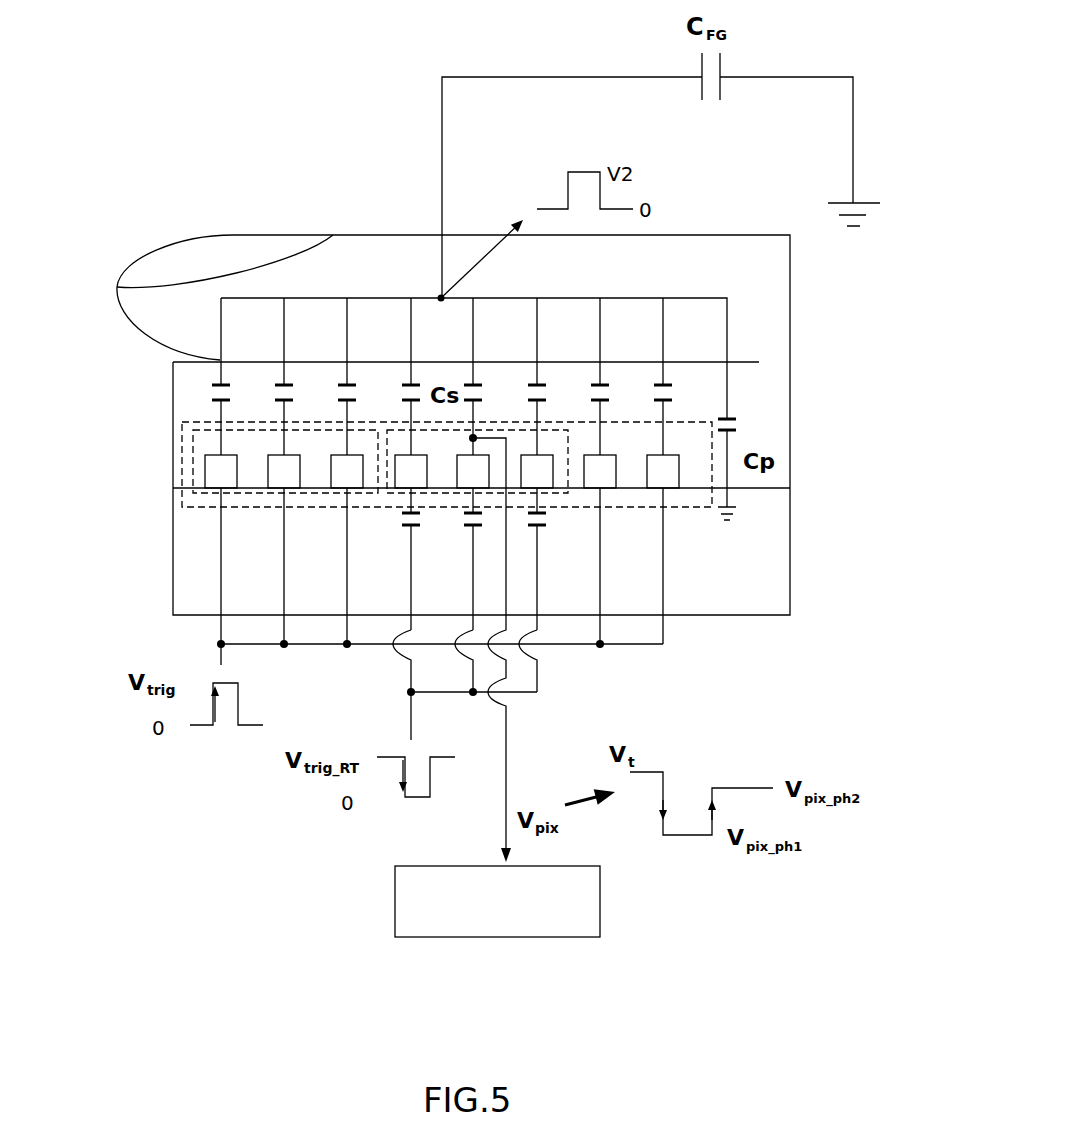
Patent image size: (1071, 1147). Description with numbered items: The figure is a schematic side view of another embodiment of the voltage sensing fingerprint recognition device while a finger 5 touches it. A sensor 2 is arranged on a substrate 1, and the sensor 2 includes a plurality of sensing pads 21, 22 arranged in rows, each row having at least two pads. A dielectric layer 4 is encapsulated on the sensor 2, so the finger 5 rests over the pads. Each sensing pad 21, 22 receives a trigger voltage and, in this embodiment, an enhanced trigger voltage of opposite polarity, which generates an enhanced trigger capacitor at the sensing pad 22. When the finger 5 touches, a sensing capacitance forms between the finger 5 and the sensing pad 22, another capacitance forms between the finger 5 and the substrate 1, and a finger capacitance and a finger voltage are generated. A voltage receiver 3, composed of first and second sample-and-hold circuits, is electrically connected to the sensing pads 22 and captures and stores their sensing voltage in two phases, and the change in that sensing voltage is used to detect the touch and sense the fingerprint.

The substrate 1 is at (188, 557).
The sensor 2 is at (182, 452).
The sensing pad 21 is at (193, 466).
The sensing pad 22 is at (548, 493).
The voltage receiver 3 is at (600, 890).
The dielectric layer 4 is at (790, 384).
The finger 5 is at (790, 287).